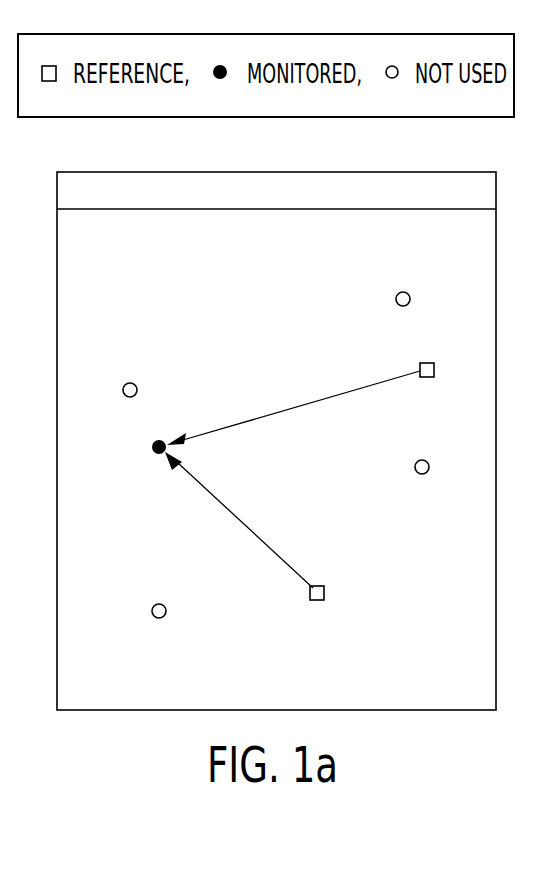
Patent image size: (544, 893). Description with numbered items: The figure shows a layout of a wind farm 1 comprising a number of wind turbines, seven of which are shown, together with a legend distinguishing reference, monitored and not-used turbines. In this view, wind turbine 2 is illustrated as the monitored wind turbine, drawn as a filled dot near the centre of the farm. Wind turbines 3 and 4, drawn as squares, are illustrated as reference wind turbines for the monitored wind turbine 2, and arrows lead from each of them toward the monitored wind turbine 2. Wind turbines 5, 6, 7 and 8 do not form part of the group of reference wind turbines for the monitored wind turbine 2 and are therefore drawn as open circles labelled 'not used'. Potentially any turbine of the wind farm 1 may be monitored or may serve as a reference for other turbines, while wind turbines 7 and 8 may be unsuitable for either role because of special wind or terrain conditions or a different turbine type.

The wind farm 1 is at (152, 248).
The monitored wind turbine 2 is at (152, 445).
The reference wind turbine 3 is at (420, 366).
The reference wind turbine 4 is at (325, 598).
The wind turbine 5 is at (415, 463).
The wind turbine 6 is at (126, 383).
The wind turbine 7 is at (396, 297).
The wind turbine 8 is at (155, 603).